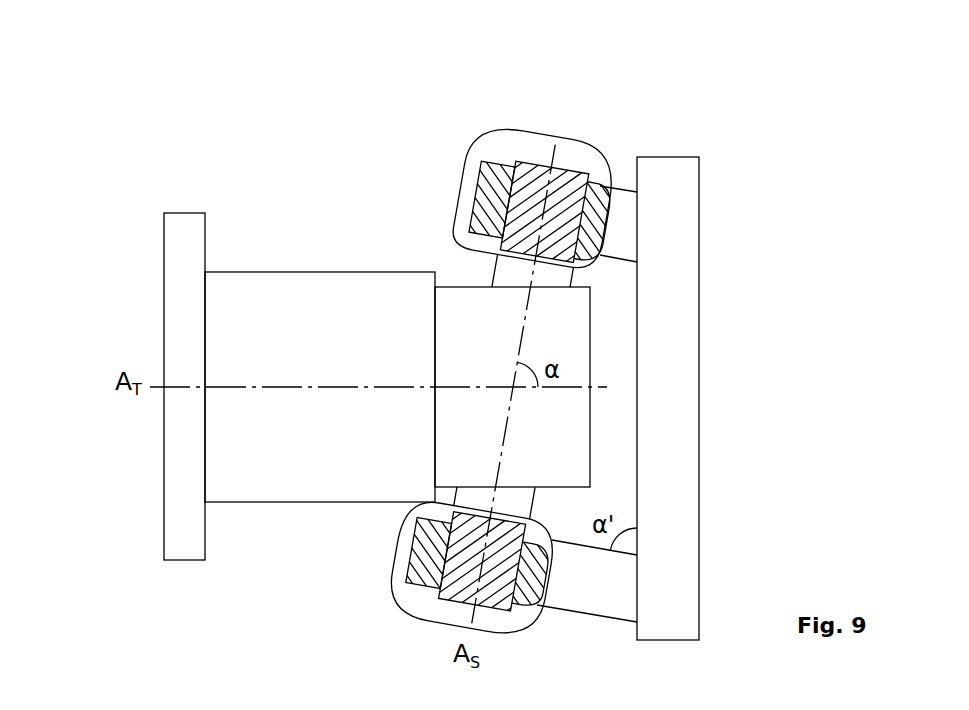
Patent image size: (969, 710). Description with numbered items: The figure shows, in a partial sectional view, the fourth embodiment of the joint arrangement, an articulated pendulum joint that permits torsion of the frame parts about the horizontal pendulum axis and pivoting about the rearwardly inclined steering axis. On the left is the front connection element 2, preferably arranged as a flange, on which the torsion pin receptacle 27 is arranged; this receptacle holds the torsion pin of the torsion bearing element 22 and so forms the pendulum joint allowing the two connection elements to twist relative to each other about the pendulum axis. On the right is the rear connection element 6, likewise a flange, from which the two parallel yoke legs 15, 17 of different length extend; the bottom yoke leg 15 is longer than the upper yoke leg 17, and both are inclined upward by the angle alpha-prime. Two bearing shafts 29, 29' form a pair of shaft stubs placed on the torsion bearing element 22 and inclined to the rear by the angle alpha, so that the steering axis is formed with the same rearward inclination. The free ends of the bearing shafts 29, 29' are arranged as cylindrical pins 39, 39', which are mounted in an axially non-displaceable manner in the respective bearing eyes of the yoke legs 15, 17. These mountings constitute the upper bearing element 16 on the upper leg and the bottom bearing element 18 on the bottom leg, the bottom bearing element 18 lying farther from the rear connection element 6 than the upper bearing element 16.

The front connection element 2 is at (177, 296).
The torsion pin receptacle 27 is at (303, 295).
The torsion bearing element 22 is at (557, 323).
The rear connection element 6 is at (667, 462).
The upper yoke leg 17 is at (627, 226).
The bottom yoke leg 15 is at (582, 598).
The bearing shaft 29 is at (616, 496).
The bearing shaft 29' is at (458, 261).
The upper bearing element 16 is at (485, 207).
The bottom bearing element 18 is at (430, 558).
The cylindrical pin 39 is at (485, 601).
The cylindrical pin 39' is at (545, 188).